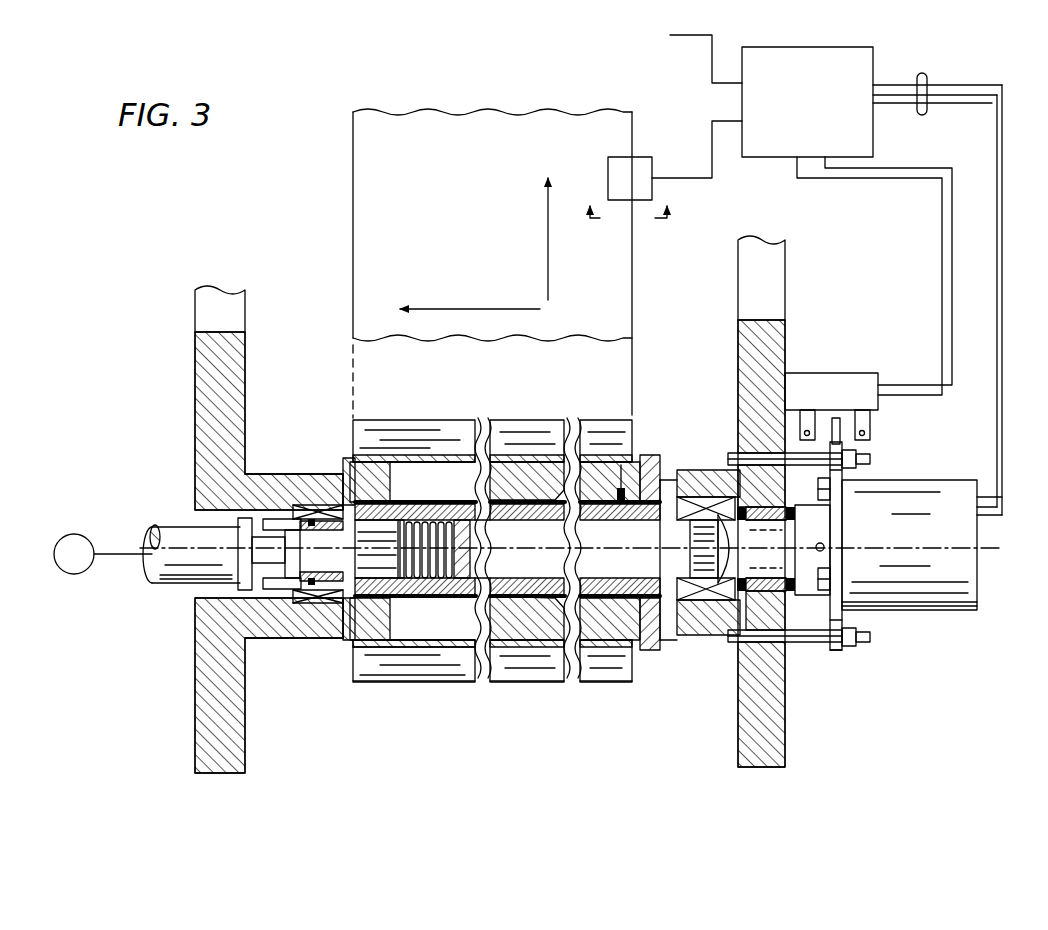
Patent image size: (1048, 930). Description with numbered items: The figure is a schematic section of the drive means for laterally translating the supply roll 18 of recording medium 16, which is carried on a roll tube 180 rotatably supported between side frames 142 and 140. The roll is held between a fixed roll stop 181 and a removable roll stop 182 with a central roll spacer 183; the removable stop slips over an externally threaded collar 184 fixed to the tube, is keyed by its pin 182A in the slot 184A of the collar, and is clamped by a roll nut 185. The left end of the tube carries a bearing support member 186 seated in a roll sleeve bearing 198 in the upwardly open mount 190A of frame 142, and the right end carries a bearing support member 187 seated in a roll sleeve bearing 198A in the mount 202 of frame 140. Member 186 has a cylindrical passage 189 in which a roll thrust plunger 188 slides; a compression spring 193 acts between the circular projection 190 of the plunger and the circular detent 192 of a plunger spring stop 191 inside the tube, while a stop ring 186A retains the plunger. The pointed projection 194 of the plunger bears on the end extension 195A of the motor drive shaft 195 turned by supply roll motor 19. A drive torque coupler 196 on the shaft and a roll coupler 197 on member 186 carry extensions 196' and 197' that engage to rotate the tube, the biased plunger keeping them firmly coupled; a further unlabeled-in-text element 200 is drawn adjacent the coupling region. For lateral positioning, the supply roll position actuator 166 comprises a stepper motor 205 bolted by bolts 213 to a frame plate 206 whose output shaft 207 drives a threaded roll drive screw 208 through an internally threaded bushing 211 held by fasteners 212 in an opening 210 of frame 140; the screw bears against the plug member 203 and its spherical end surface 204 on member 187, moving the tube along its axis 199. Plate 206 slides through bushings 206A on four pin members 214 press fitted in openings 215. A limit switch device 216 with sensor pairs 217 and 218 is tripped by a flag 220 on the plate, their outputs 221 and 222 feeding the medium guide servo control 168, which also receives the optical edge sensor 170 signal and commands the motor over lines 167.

The medium 16 is at (468, 144).
The supply roll 18 is at (538, 430).
The supply roll motor 19 is at (74, 534).
The side frame 140 is at (783, 754).
The side frame 142 is at (200, 676).
The supply roll position actuator 166 is at (838, 684).
The supply lines 167 is at (712, 178).
The medium guide servo control 168 is at (829, 47).
The optical edge sensor 170 is at (628, 155).
The roll tube 180 is at (448, 598).
The roll stop 181 is at (354, 640).
The roll stop 182 is at (609, 624).
The pin 182A is at (646, 468).
The roll spacer 183 is at (526, 647).
The collar 184 is at (588, 522).
The slot 184A is at (588, 440).
The roll nut 185 is at (624, 484).
The bearing support member 186 is at (348, 458).
The stop ring 186A is at (388, 560).
The bearing support member 187 is at (654, 643).
The roll thrust plunger 188 is at (392, 541).
The cylindrical passage 189 is at (390, 505).
The circular projection 190 is at (416, 598).
The mount 190A is at (297, 473).
The plunger spring stop 191 is at (456, 531).
The circular detent 192 is at (456, 561).
The compression spring 193 is at (453, 520).
The pointed projection 194 is at (262, 554).
The motor drive shaft 195 is at (172, 530).
The end extension 195A is at (238, 548).
The drive torque coupler 196 is at (226, 511).
The coupler extension 196' is at (223, 606).
The roll coupler 197 is at (300, 627).
The coupler extension 197' is at (299, 503).
The roll sleeve bearing 198 is at (326, 603).
The roll sleeve bearing 198A is at (705, 495).
The axis 199 is at (533, 548).
The seal 200 is at (310, 600).
The mount 202 is at (680, 641).
The plug member 203 is at (698, 534).
The spherical end surface 204 is at (700, 562).
The stepper motor 205 is at (943, 611).
The frame plate 206 is at (842, 652).
The bushing 206A is at (838, 450).
The output shaft 207 is at (826, 548).
The threaded roll drive screw 208 is at (735, 623).
The opening 210 is at (748, 534).
The threaded bushing 211 is at (822, 490).
The fasteners 212 is at (750, 512).
The bolts 213 is at (832, 506).
The pin members 214 is at (862, 458).
The openings 215 is at (752, 452).
The limit switch device 216 is at (865, 374).
The optical sensor and light source pair 217 is at (804, 417).
The optical sensor and light source pair 218 is at (870, 432).
The flag 220 is at (837, 421).
The wire 221 is at (942, 230).
The output 222 is at (948, 273).